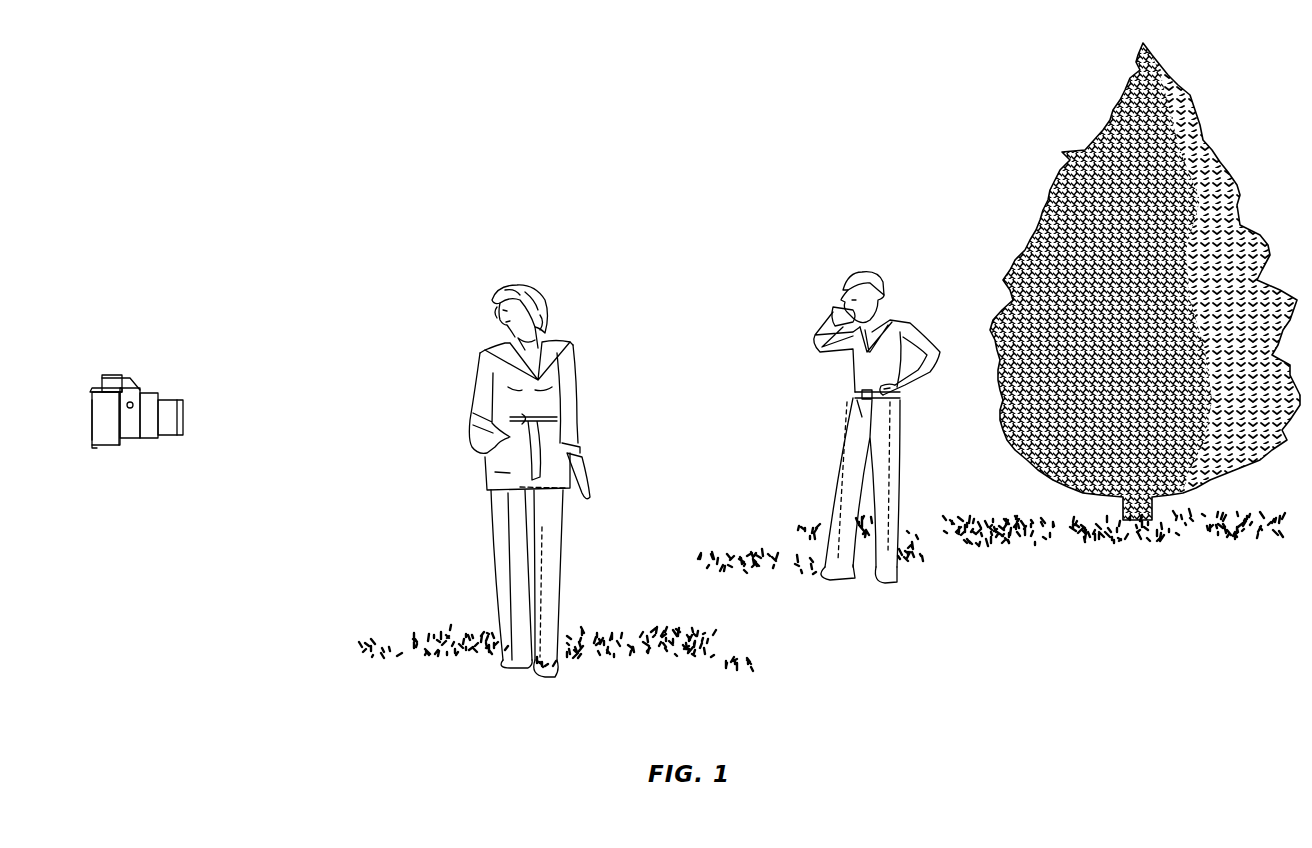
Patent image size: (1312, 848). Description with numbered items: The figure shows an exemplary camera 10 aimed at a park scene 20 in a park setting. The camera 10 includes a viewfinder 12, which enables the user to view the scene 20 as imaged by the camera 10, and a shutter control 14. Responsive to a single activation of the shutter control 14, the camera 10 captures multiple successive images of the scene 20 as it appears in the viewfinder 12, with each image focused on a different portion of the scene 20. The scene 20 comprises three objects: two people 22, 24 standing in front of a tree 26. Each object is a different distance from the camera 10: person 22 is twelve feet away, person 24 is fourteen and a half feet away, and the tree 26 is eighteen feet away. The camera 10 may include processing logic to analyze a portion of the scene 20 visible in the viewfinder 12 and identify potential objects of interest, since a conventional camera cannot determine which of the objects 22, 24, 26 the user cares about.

The camera 10 is at (102, 447).
The viewfinder 12 is at (89, 402).
The shutter control 14 is at (113, 375).
The park scene 20 is at (472, 173).
The person 22 is at (560, 337).
The person 24 is at (893, 312).
The tree 26 is at (1198, 148).